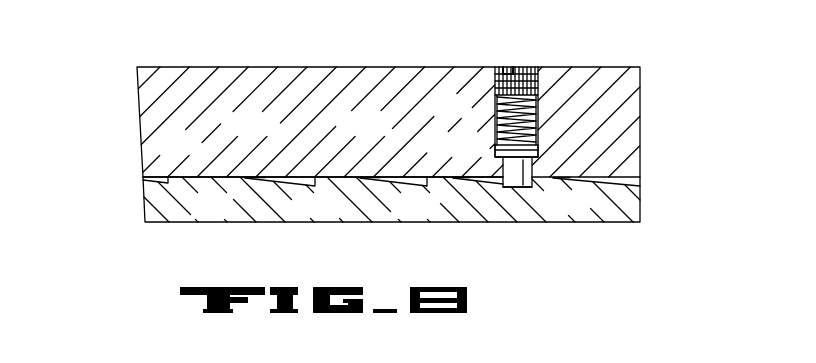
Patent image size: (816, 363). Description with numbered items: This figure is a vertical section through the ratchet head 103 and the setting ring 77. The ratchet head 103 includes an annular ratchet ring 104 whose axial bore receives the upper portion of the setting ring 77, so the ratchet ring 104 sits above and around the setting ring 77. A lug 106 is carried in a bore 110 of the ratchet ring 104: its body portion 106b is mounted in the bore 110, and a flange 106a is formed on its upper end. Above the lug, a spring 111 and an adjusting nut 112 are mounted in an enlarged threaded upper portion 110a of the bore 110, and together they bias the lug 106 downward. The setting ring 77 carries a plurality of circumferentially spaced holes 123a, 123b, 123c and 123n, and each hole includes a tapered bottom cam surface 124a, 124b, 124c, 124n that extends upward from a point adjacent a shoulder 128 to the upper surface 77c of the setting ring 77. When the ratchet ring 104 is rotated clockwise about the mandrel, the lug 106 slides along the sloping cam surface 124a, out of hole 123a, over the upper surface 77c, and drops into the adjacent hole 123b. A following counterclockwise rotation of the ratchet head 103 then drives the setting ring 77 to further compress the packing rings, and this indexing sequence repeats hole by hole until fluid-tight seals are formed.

The ratchet ring 104 is at (281, 66).
The setting ring 77 is at (641, 208).
The upper surface of the setting ring 77c is at (222, 175).
The ratchet head 103 is at (583, 63).
The bore 110 is at (540, 116).
The enlarged threaded upper portion of the bore 110a is at (540, 85).
The spring 111 is at (497, 128).
The adjusting nut 112 is at (525, 66).
The lug 106 is at (541, 171).
The flange 106a is at (540, 148).
The body portion 106b is at (516, 186).
The hole 123n is at (190, 183).
The hole 123c is at (290, 185).
The hole 123b is at (382, 184).
The hole 123a is at (490, 186).
The tapered bottom cam surface 124n is at (164, 178).
The tapered bottom cam surface 124c is at (268, 178).
The tapered bottom cam surface 124b is at (377, 177).
The tapered bottom cam surface 124a is at (480, 177).
The shoulder 128 is at (177, 190).